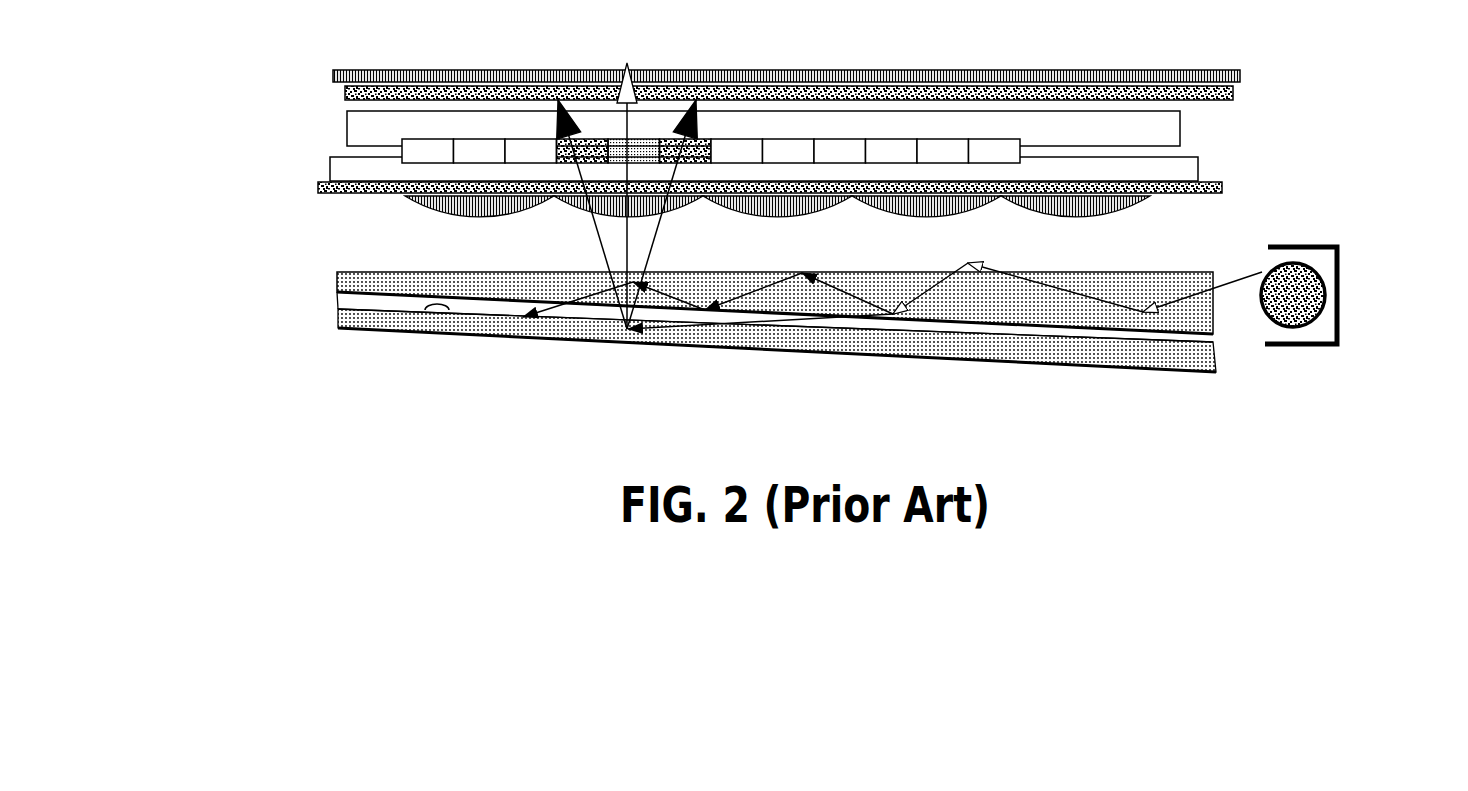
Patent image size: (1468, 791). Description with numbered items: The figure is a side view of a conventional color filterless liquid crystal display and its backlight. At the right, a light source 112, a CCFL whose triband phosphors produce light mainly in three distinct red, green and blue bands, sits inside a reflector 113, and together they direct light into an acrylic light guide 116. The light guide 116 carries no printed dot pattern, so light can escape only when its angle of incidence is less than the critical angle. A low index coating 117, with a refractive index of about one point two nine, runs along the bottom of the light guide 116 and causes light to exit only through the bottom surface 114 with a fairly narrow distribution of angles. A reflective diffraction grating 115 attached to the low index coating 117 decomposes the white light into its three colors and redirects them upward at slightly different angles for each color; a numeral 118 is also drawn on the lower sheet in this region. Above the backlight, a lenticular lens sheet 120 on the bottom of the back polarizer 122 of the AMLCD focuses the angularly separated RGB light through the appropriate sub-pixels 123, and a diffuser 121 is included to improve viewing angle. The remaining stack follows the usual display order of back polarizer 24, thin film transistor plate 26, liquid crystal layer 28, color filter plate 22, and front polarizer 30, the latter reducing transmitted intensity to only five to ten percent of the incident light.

The color filter plate 22 is at (711, 87).
The back polarizer 24 is at (1223, 187).
The thin film transistor plate 26 is at (1198, 162).
The liquid crystal layer 28 is at (353, 152).
The front polarizer 30 is at (802, 59).
The light source 112 is at (1297, 328).
The reflector 113 is at (1340, 322).
The bottom surface 114 is at (1063, 330).
The reflective diffraction grating 115 is at (442, 322).
The acrylic light guide 116 is at (746, 244).
The low index coating 117 is at (387, 306).
The reflector sheet 118 is at (777, 361).
The lenticular lens sheet 120 is at (410, 198).
The diffuser 121 is at (443, 90).
The back polarizer 122 is at (783, 151).
The sub-pixels 123 is at (590, 140).